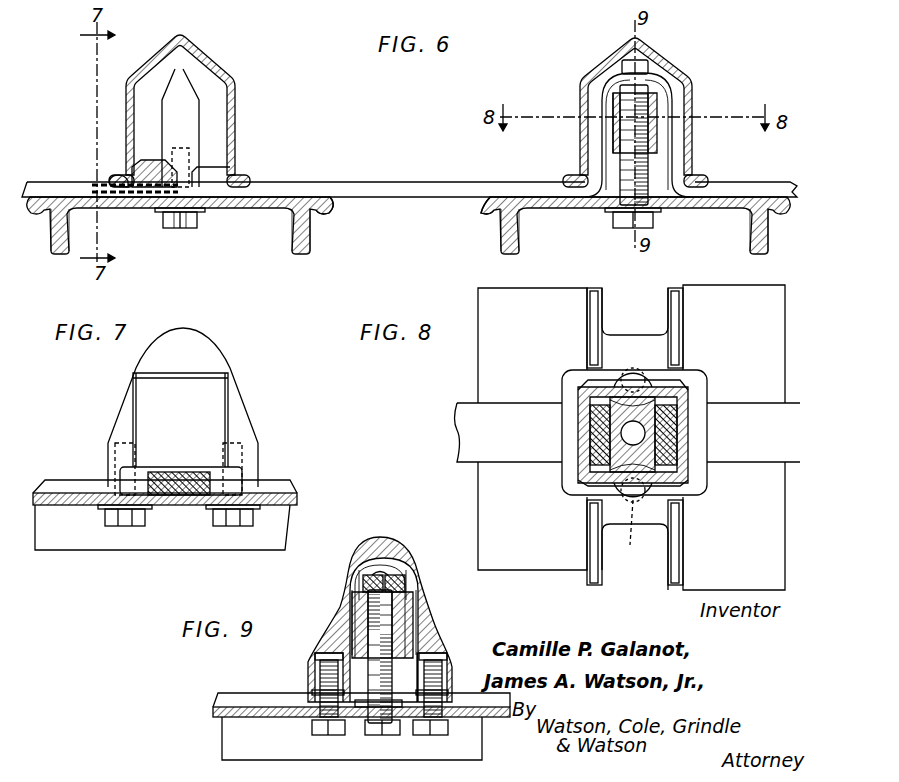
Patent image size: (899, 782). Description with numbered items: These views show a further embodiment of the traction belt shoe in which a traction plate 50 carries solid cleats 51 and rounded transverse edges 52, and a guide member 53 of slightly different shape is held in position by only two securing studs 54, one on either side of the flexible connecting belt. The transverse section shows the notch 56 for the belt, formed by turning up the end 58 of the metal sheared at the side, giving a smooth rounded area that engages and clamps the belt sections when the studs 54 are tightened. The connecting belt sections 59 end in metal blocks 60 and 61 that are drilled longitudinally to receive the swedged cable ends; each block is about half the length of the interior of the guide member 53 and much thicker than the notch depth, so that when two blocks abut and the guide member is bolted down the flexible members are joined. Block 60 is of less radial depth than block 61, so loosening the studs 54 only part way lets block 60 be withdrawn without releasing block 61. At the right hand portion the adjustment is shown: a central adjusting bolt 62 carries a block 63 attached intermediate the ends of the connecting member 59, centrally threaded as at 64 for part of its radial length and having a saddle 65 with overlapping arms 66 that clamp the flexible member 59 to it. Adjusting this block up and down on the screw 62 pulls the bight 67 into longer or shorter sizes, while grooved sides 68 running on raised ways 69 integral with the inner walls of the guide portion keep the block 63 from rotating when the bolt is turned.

In FIG. 6, the traction plate 50 is at (248, 207).
In FIG. 7, the traction plate 50 is at (62, 493).
In FIG. 8, the traction plate 50 is at (493, 357).
In FIG. 9, the traction plate 50 is at (214, 710).
In FIG. 6, the solid cleats 51 is at (60, 240).
In FIG. 7, the solid cleats 51 is at (72, 540).
In FIG. 9, the solid cleats 51 is at (232, 736).
In FIG. 6, the rounded transverse edges 52 is at (330, 217).
In FIG. 6, the guide member 53 is at (236, 121).
In FIG. 7, the guide member 53 is at (230, 385).
In FIG. 8, the guide member 53 is at (690, 437).
In FIG. 9, the guide member 53 is at (347, 557).
In FIG. 6, the securing studs 54 is at (180, 222).
In FIG. 7, the securing studs 54 is at (123, 522).
In FIG. 8, the securing studs 54 is at (638, 372).
In FIG. 9, the securing studs 54 is at (323, 670).
In FIG. 7, the notch 56 is at (143, 467).
In FIG. 6, the turned-up end 58 is at (115, 174).
In FIG. 6, the connecting belt sections 59 is at (38, 181).
In FIG. 7, the connecting belt sections 59 is at (196, 497).
In FIG. 8, the connecting belt sections 59 is at (462, 432).
In FIG. 6, the end block 60 is at (210, 173).
In FIG. 6, the end block 61 is at (147, 167).
In FIG. 6, the central adjusting bolt 62 is at (647, 167).
In FIG. 9, the central adjusting bolt 62 is at (377, 724).
In FIG. 6, the block 63 is at (613, 125).
In FIG. 8, the block 63 is at (645, 398).
In FIG. 9, the block 63 is at (412, 630).
In FIG. 6, the central thread 64 is at (647, 102).
In FIG. 8, the central thread 64 is at (612, 458).
In FIG. 9, the central thread 64 is at (370, 597).
In FIG. 6, the saddle 65 is at (668, 77).
In FIG. 9, the saddle 65 is at (363, 582).
In FIG. 6, the overlapping arms 66 is at (620, 53).
In FIG. 9, the overlapping arms 66 is at (374, 577).
In FIG. 6, the bight 67 is at (610, 83).
In FIG. 9, the bight 67 is at (400, 574).
In FIG. 8, the grooved sides 68 is at (663, 465).
In FIG. 9, the grooved sides 68 is at (348, 620).
In FIG. 8, the raised ways 69 is at (682, 486).
In FIG. 9, the raised ways 69 is at (414, 607).